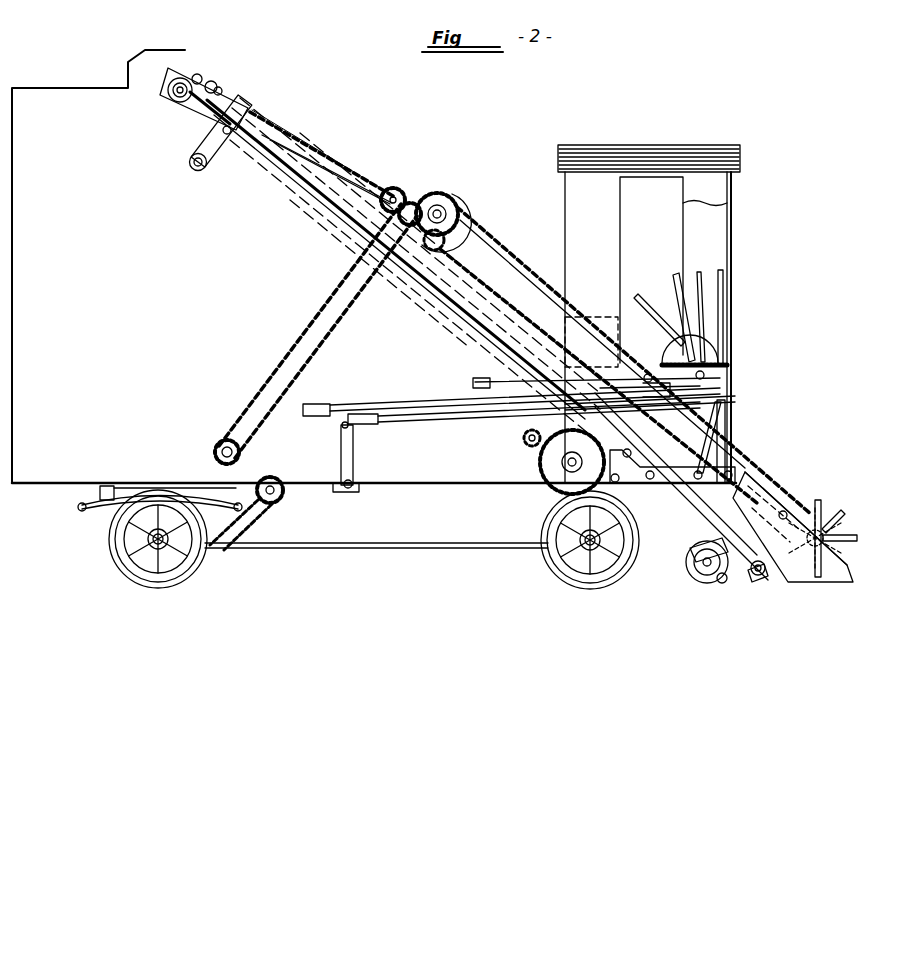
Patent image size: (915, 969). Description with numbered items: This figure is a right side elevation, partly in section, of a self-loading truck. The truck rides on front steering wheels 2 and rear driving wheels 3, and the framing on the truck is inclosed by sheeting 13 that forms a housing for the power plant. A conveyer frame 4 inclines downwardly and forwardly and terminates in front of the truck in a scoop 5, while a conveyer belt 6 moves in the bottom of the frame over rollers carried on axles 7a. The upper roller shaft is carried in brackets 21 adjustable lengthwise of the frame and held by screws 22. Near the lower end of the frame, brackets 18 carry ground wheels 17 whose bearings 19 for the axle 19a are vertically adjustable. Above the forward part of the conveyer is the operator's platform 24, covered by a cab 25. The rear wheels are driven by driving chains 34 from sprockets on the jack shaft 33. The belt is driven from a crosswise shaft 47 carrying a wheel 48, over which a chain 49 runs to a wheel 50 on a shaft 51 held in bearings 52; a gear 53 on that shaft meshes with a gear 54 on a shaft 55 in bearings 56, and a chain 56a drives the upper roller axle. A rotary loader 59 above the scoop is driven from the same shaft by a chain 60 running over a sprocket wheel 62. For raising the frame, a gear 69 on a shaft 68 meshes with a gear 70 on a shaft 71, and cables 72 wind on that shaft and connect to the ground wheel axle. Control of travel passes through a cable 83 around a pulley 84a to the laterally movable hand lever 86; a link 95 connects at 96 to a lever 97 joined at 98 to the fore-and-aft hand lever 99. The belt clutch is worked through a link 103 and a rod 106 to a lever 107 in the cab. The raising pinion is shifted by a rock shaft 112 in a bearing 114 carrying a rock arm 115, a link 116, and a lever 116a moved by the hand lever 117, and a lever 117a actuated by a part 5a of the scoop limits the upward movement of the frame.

The front steering wheels 2 is at (548, 562).
The rear driving wheels 3 is at (194, 560).
The conveyer frame 4 is at (270, 132).
The scoop or shovel 5 is at (852, 578).
The part of the scoop 5a is at (754, 480).
The conveyer belt or apron 6 is at (296, 203).
The axle 7a is at (758, 590).
The sheeting 13 is at (374, 266).
The ground wheels 17 is at (700, 580).
The brackets 18 is at (692, 556).
The bearings 19 is at (694, 568).
The axle 19a is at (720, 584).
The brackets 21 is at (215, 86).
The screws 22 is at (200, 77).
The platform 24 is at (733, 360).
The cab 25 is at (724, 182).
The jack shaft 33 is at (280, 500).
The driving chains 34 is at (250, 516).
The shaft 47 is at (216, 453).
The wheel 48 is at (222, 443).
The belt or chain 49 is at (312, 322).
The wheel 50 is at (448, 196).
The shaft 51 is at (448, 212).
The bearings 52 is at (378, 250).
The gear 53 is at (468, 218).
The gear 54 is at (412, 202).
The shaft 55 is at (395, 188).
The bearings 56 is at (372, 176).
The chain or belt 56a is at (316, 144).
The rotary loader 59 is at (856, 520).
The belt or chain 60 is at (508, 255).
The sprocket wheel 62 is at (817, 500).
The shaft 68 is at (524, 441).
The gear 69 is at (528, 436).
The gear 70 is at (546, 480).
The shaft 71 is at (571, 458).
The cables 72 is at (660, 470).
The cable 83 is at (676, 406).
The pulley 84a is at (726, 422).
The hand lever 86 is at (724, 288).
The link 95 is at (380, 406).
The connection 96 is at (618, 365).
The lever 97 is at (662, 363).
The connection 98 is at (706, 378).
The hand lever 99 is at (640, 297).
The link 103 is at (343, 427).
The rod 106 is at (466, 398).
The lever 107 is at (676, 282).
The rock shaft 112 is at (353, 490).
The bearing 114 is at (348, 494).
The rock arm 115 is at (346, 462).
The link 116 is at (426, 426).
The lever 116a is at (704, 393).
The hand lever 117 is at (699, 272).
The lever 117a is at (718, 440).